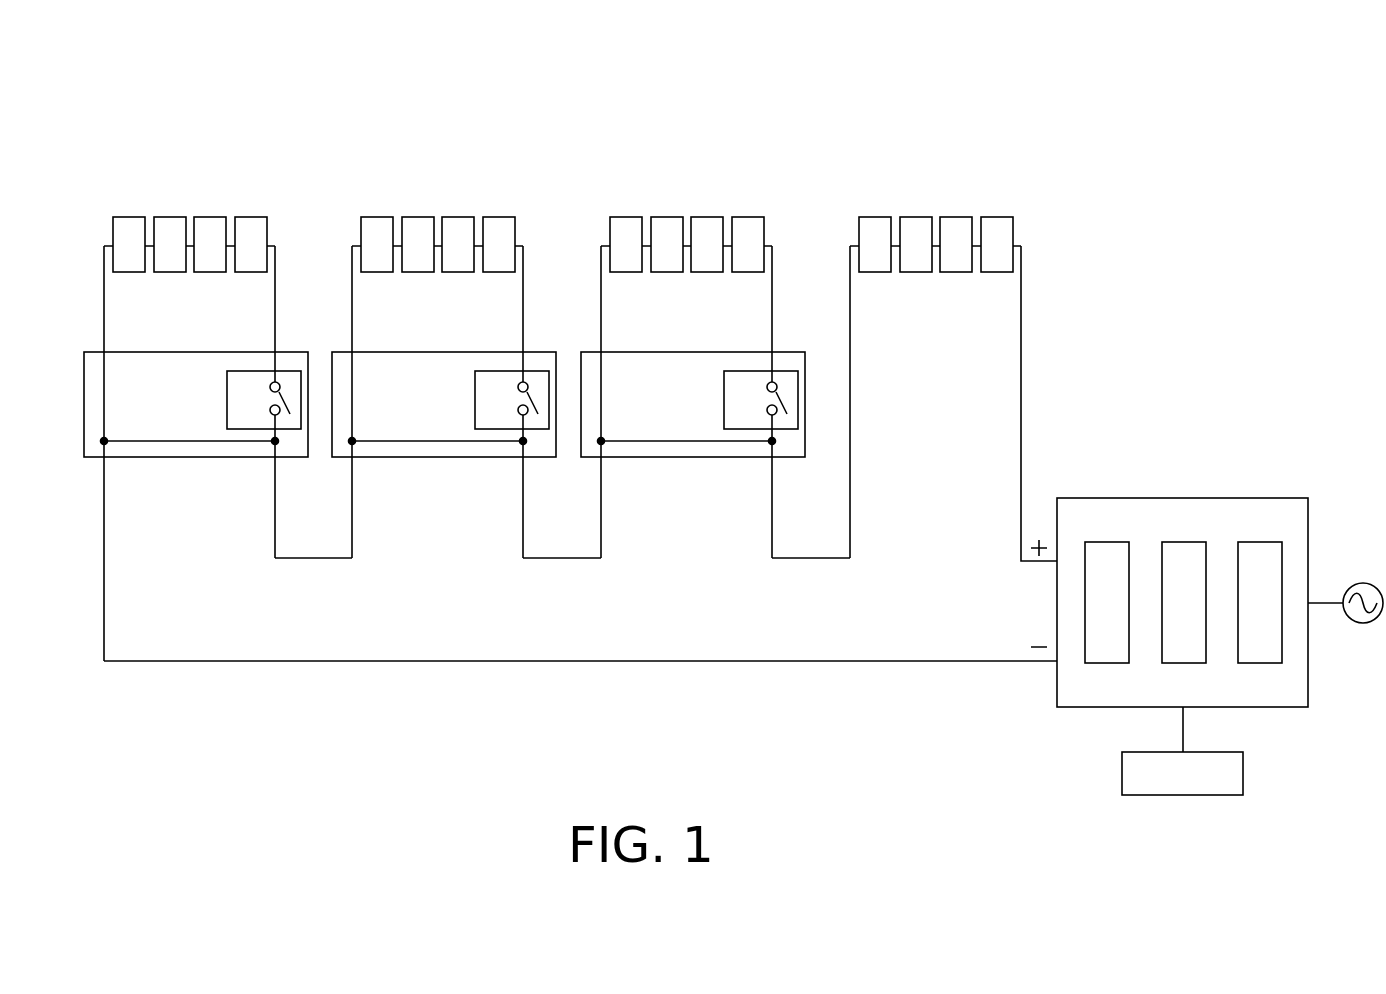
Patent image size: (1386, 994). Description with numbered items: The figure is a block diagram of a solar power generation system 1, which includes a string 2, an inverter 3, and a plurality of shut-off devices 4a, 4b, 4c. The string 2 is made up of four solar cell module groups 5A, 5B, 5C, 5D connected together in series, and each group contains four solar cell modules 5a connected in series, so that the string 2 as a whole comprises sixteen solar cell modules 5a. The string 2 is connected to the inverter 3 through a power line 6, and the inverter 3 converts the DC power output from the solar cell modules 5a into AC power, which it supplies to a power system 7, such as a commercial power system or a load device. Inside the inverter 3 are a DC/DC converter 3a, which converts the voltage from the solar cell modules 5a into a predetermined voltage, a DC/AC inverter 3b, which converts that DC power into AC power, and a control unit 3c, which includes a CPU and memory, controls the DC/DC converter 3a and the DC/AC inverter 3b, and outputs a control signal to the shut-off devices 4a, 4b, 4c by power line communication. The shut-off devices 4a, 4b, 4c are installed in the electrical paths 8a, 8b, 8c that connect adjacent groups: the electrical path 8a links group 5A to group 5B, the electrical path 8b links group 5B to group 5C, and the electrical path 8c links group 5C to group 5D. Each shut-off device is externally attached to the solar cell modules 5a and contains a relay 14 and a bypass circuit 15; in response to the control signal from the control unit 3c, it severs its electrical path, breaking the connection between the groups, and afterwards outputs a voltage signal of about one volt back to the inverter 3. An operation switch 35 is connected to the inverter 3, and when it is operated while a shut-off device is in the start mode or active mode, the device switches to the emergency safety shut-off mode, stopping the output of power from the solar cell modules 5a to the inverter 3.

The solar power generation system 1 is at (1214, 156).
The string 2 is at (965, 56).
The inverter 3 is at (1297, 495).
The DC/DC converter 3a is at (1111, 541).
The DC/AC inverter 3b is at (1187, 541).
The control unit 3c is at (1263, 541).
The shut-off device 4a is at (195, 460).
The shut-off device 4b is at (443, 460).
The shut-off device 4c is at (692, 460).
The solar cell module group 5A is at (277, 114).
The solar cell module group 5B is at (525, 114).
The solar cell module group 5C is at (774, 114).
The solar cell module group 5D is at (1023, 114).
The solar cell module 5a is at (263, 215).
The power line 6 is at (1021, 333).
The power system 7 is at (1363, 582).
The electrical path 8a is at (315, 560).
The electrical path 8b is at (563, 560).
The electrical path 8c is at (812, 560).
The relay 14 is at (242, 430).
The bypass circuit 15 is at (130, 459).
The operation switch 35 is at (1243, 772).